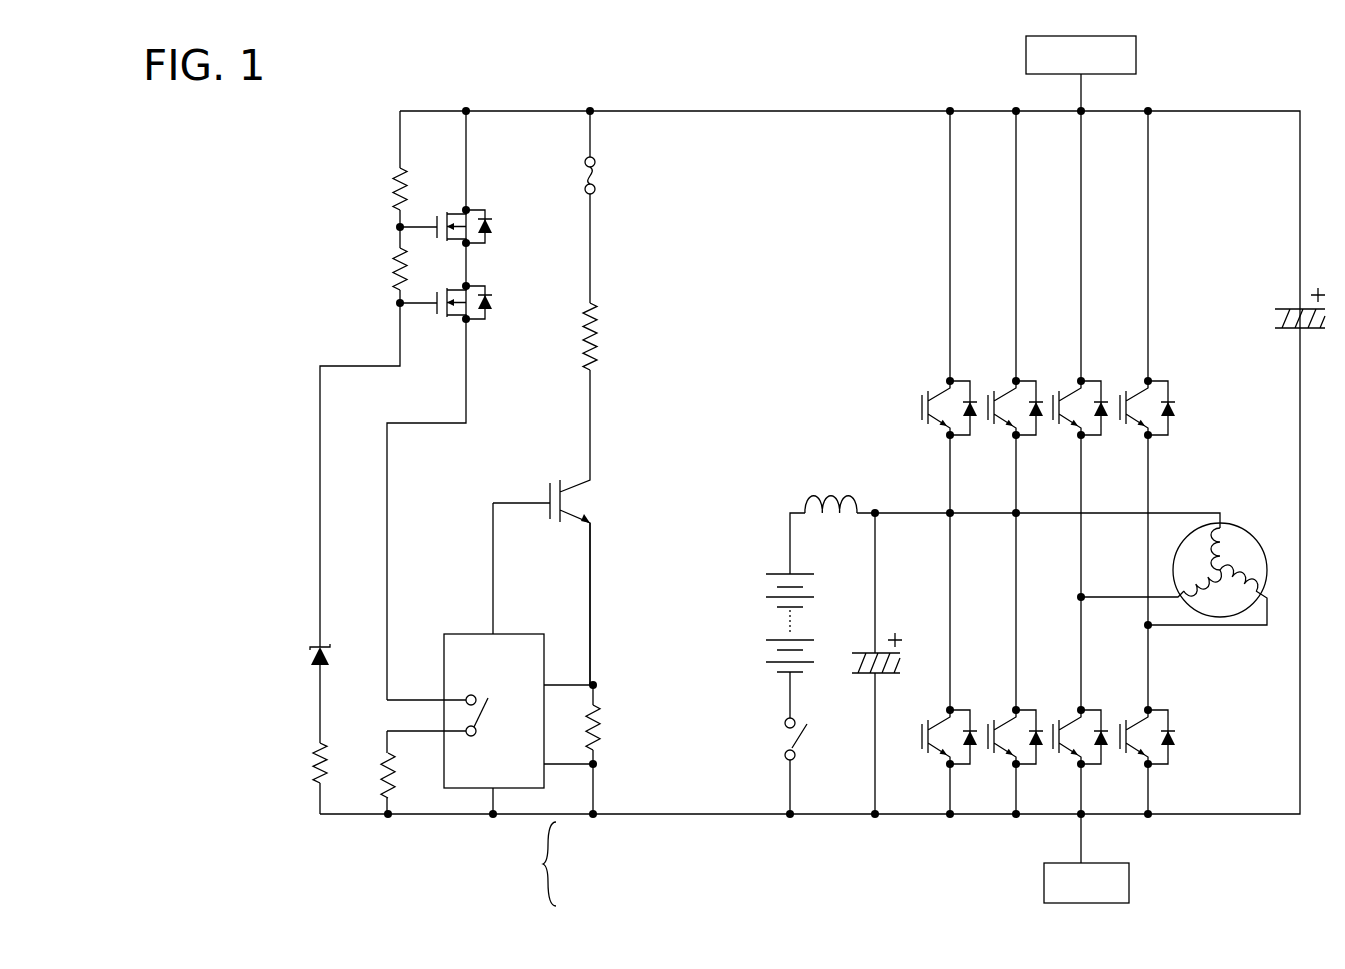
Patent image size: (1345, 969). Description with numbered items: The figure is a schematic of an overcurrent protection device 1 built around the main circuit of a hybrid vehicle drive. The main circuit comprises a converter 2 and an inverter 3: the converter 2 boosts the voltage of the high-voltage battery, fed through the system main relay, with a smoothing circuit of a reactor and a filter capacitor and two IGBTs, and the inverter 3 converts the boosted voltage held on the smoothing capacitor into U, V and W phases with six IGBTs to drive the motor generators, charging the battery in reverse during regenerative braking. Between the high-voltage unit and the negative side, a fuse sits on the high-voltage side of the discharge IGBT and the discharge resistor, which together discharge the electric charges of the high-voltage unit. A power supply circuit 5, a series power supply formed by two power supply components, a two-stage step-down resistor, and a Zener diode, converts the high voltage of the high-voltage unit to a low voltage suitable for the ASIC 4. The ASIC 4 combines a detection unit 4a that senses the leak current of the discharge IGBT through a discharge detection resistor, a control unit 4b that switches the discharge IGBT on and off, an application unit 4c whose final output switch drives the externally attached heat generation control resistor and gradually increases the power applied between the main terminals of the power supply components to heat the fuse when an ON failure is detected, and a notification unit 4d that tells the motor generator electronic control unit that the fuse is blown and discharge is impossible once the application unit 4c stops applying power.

The overcurrent protection device 1 is at (880, 59).
The converter 2 is at (907, 383).
The inverter 3 is at (1197, 762).
The application specific integrated circuit (ASIC) 4 is at (508, 789).
The detection unit 4a is at (570, 831).
The control unit 4b is at (570, 853).
The application unit 4c is at (569, 875).
The notification unit 4d is at (570, 897).
The power supply circuit 5 is at (368, 226).